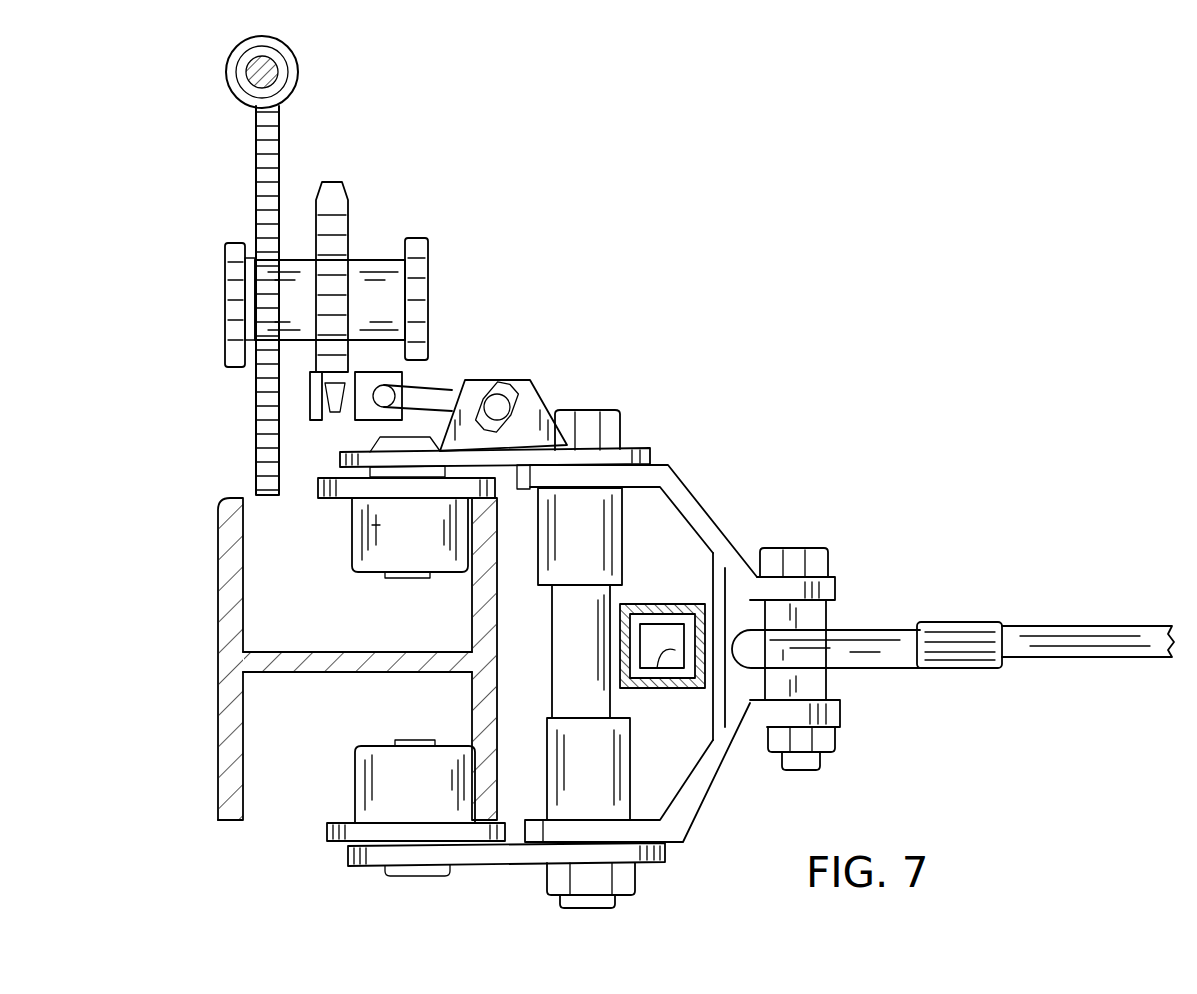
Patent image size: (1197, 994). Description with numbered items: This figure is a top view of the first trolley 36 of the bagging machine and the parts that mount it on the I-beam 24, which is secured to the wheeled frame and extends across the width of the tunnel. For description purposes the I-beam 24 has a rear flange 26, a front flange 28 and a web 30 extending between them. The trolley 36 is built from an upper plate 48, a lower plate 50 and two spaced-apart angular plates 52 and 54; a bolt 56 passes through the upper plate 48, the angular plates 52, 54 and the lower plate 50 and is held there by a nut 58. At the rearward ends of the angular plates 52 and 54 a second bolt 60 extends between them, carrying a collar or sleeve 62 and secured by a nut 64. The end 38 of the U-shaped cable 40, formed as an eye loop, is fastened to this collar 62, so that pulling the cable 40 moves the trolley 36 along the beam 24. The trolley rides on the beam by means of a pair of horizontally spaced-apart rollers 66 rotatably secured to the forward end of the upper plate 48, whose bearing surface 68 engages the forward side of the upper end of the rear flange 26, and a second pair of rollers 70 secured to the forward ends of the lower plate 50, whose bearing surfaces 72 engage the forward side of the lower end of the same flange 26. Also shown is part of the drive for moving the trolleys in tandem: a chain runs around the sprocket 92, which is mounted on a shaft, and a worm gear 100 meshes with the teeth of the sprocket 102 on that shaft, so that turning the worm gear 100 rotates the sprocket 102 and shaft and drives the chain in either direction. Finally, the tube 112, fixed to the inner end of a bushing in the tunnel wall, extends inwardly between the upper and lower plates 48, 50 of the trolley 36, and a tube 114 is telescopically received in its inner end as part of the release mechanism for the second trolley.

The I-beam 24 is at (313, 659).
The rear flange 26 is at (473, 694).
The front flange 28 is at (226, 765).
The web 30 is at (367, 650).
The trolley 36 is at (682, 634).
The end of cable 38 is at (876, 658).
The U-shaped cable 40 is at (1102, 623).
The upper plate 48 is at (625, 450).
The lower plate 50 is at (513, 858).
The angular plate 52 is at (712, 522).
The angular plate 54 is at (692, 810).
The bolt 56 is at (617, 905).
The nut 58 is at (617, 883).
The bolt 60 is at (820, 768).
The collar or sleeve 62 is at (815, 625).
The nut 64 is at (832, 742).
The rollers 66 is at (380, 530).
The bearing surface 68 is at (457, 520).
The rollers 70 is at (382, 790).
The bearing surfaces 72 is at (498, 762).
The sprocket 92 is at (330, 218).
The worm gear 100 is at (226, 72).
The sprocket 102 is at (256, 200).
The tube 112 is at (662, 642).
The tube 114 is at (667, 652).